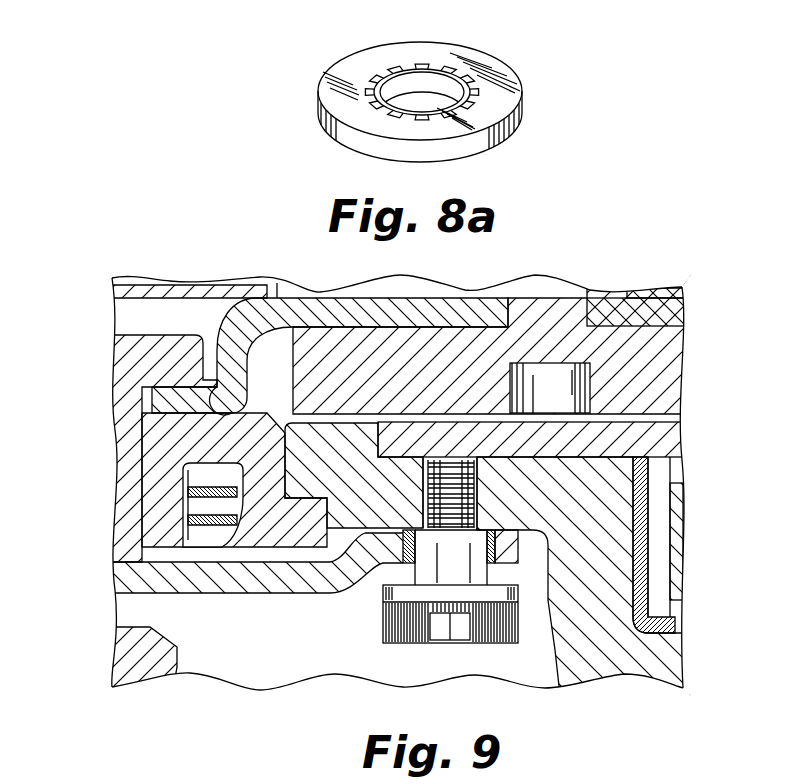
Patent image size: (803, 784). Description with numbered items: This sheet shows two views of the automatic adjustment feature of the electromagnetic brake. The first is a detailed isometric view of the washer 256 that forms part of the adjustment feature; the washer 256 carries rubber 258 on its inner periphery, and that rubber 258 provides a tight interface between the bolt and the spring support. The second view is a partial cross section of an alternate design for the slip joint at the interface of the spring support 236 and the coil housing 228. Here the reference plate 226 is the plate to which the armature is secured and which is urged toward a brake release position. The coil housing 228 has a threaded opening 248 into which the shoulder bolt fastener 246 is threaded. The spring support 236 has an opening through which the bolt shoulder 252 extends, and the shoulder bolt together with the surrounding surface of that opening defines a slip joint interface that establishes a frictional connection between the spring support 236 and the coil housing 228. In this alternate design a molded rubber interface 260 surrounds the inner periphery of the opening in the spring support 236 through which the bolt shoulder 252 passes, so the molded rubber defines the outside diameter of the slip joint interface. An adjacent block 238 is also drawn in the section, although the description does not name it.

In FIG. 8A, the washer 256 is at (488, 112).
In FIG. 8A, the rubber 258 is at (445, 68).
In FIG. 9, the reference plate 226 is at (243, 328).
In FIG. 9, the side wall block 238 is at (125, 473).
In FIG. 9, the spring support 236 is at (172, 580).
In FIG. 9, the molded rubber interface 260 is at (372, 568).
In FIG. 9, the coil housing 228 is at (597, 553).
In FIG. 9, the threaded opening 248 is at (430, 495).
In FIG. 9, the shoulder bolt 252 is at (453, 573).
In FIG. 9, the shoulder bolt fastener 246 is at (438, 627).